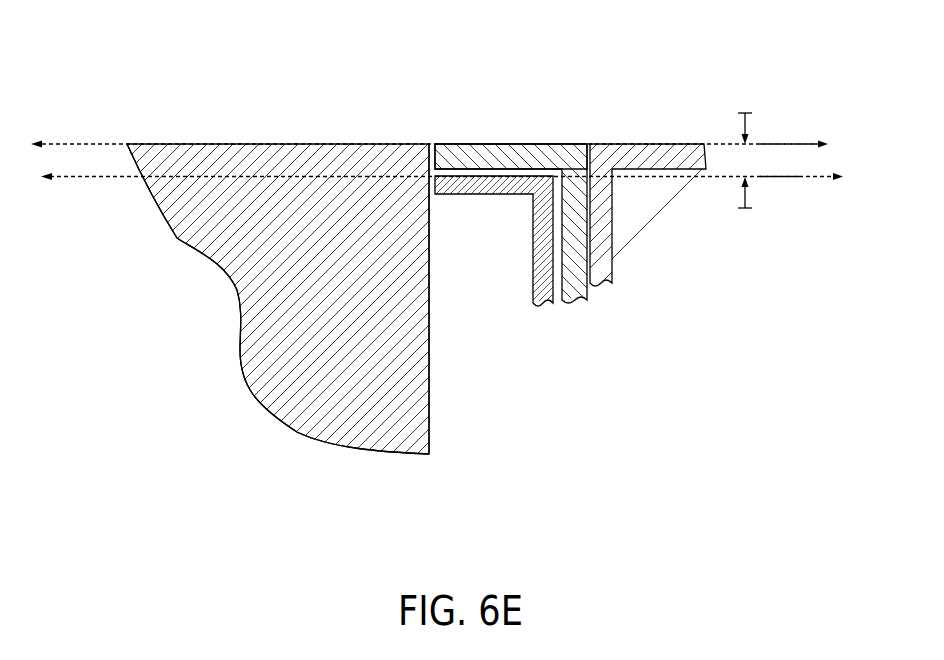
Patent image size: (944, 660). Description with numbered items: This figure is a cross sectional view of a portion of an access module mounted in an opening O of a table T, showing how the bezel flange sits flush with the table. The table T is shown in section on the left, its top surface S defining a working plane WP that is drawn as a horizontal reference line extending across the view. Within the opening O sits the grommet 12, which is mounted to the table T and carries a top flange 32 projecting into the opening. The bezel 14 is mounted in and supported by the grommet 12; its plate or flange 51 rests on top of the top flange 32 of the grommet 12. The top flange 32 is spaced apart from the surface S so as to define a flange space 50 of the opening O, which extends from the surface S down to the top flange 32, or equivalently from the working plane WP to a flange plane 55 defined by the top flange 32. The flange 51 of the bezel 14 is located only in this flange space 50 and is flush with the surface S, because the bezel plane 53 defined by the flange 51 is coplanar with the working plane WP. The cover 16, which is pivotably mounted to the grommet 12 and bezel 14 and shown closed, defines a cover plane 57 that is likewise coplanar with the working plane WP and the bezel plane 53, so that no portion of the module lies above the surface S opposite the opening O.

The working plane WP is at (84, 143).
The surface S is at (287, 261).
The table T is at (178, 240).
The opening O is at (430, 420).
The grommet 12 is at (570, 199).
The bezel 14 is at (518, 183).
The flange 51 is at (470, 145).
The top flange 32 is at (457, 195).
The cover 16 is at (658, 170).
The flange space 50 is at (743, 125).
The bezel plane 53 is at (798, 143).
The flange plane 55 is at (793, 178).
The cover plane 57 is at (772, 142).